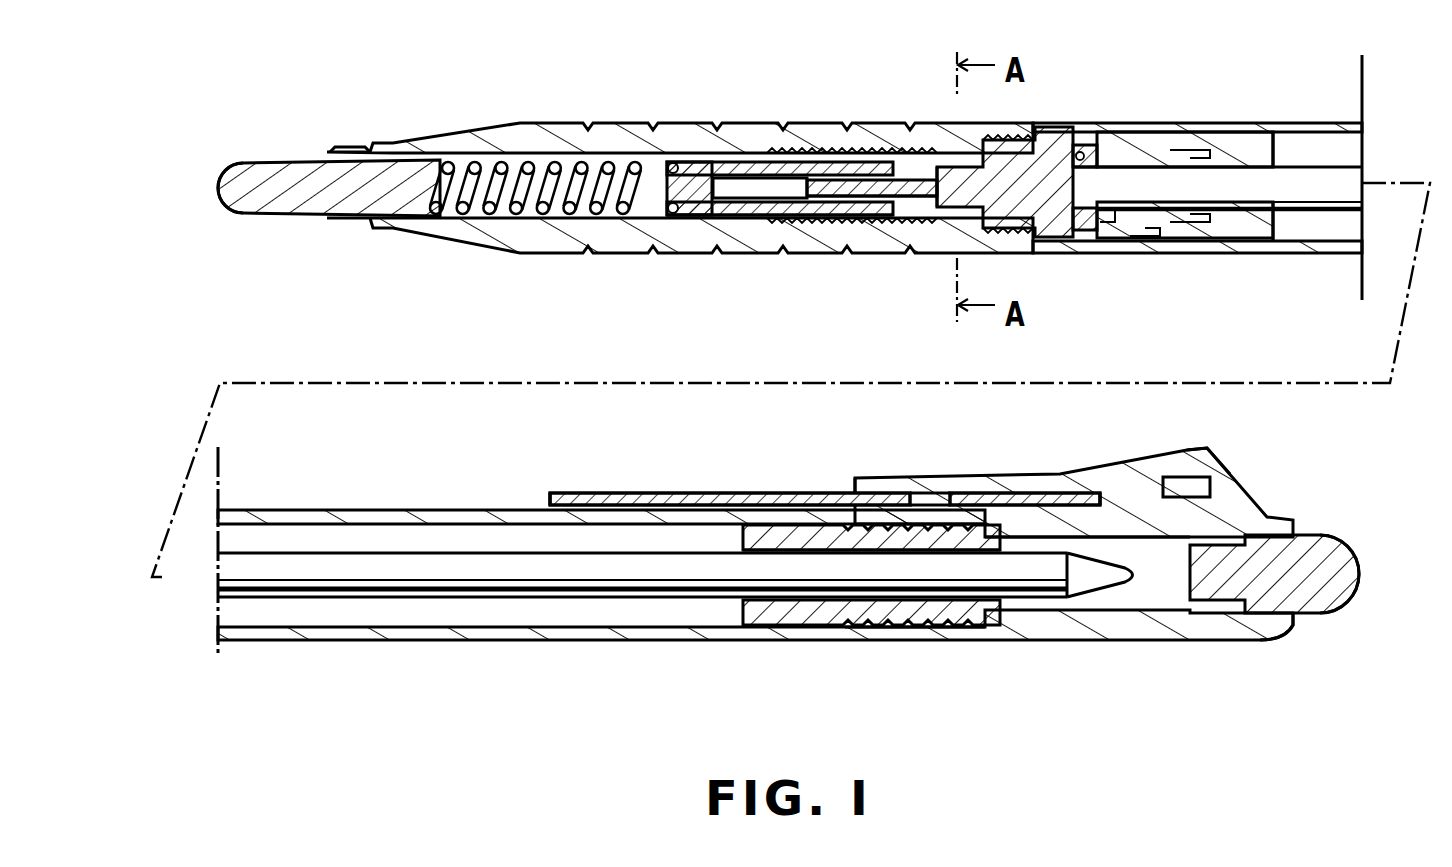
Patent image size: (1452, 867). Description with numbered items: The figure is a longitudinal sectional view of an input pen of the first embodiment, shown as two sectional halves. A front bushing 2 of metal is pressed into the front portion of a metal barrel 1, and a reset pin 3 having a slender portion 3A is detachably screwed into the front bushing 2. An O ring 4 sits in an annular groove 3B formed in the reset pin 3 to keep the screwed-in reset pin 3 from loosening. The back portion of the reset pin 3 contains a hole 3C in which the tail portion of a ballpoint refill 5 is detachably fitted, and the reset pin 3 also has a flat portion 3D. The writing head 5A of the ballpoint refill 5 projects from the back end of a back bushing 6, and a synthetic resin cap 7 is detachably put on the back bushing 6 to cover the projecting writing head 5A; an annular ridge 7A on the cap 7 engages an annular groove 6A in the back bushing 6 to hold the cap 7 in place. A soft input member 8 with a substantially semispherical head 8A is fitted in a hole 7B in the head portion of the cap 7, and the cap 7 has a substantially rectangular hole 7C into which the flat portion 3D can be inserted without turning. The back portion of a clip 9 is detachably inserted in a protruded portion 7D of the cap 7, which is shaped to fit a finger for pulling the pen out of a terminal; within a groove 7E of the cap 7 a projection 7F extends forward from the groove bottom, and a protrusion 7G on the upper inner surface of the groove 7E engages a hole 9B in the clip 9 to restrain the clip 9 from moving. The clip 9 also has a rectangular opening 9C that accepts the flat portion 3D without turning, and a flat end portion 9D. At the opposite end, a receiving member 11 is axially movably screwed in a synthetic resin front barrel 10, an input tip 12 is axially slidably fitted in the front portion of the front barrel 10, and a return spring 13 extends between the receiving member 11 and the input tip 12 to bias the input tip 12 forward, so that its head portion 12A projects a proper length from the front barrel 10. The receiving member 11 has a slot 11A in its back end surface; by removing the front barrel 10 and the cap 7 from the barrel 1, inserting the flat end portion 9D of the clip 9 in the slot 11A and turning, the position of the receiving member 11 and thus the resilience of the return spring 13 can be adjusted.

The barrel 1 is at (1292, 130).
The front bushing 2 is at (1102, 155).
The reset pin 3 is at (955, 150).
The slender portion 3A is at (822, 205).
The annular groove 3B is at (1080, 215).
The hole 3C is at (1150, 238).
The flat portion 3D is at (948, 210).
The O ring 4 is at (1079, 160).
The ballpoint refill 5 is at (285, 572).
The writing head 5A is at (1100, 580).
The back bushing 6 is at (782, 540).
The annular groove 6A is at (880, 552).
The cap 7 is at (1150, 500).
The annular ridge 7A is at (895, 627).
The hole 7B is at (1272, 612).
The rectangular hole 7C is at (1185, 487).
The protruded portion 7D is at (1205, 460).
The groove 7E is at (982, 498).
The projection 7F is at (1122, 500).
The protrusion 7G is at (946, 503).
The soft input member 8 is at (1292, 560).
The semispherical head 8A is at (1362, 580).
The clip 9 is at (645, 500).
The hole 9B is at (930, 500).
The rectangular opening 9C is at (1013, 505).
The flat end portion 9D is at (552, 498).
The front barrel 10 is at (615, 142).
The receiving member 11 is at (690, 170).
The slot 11A is at (893, 215).
The input tip 12 is at (345, 183).
The head portion 12A is at (230, 192).
The return spring 13 is at (520, 168).